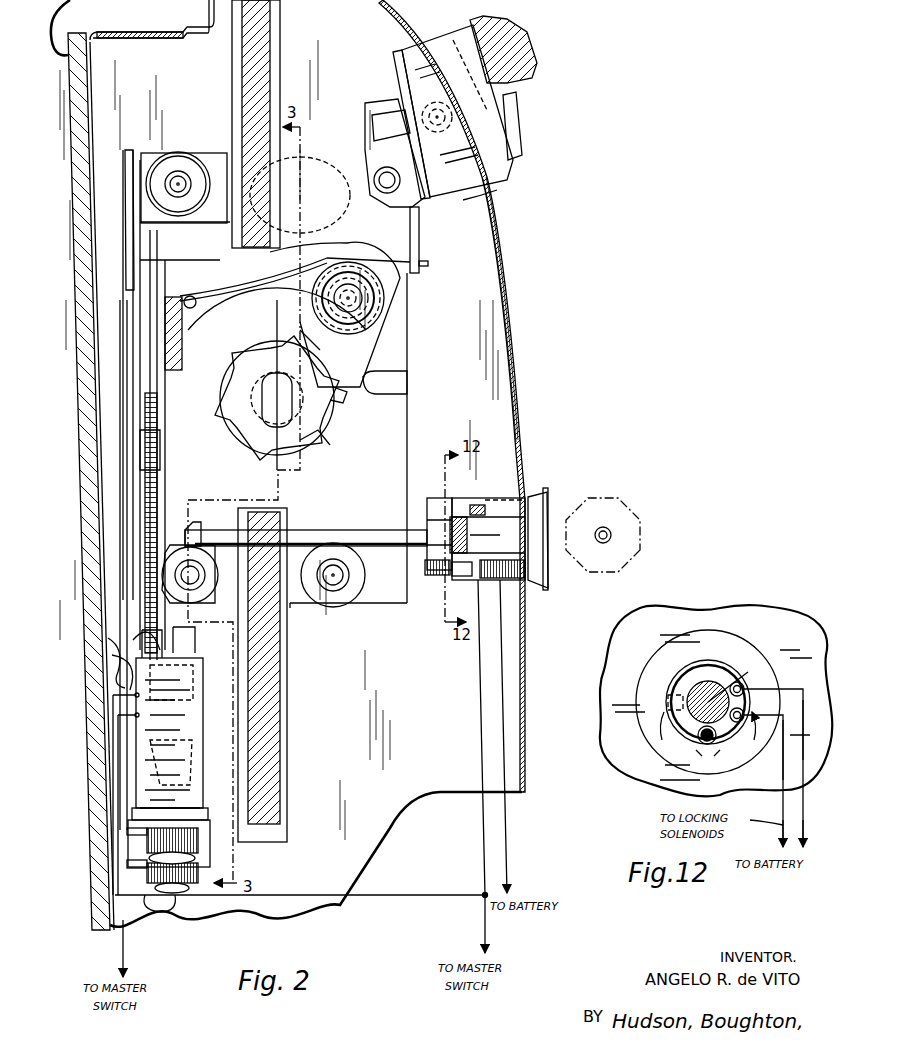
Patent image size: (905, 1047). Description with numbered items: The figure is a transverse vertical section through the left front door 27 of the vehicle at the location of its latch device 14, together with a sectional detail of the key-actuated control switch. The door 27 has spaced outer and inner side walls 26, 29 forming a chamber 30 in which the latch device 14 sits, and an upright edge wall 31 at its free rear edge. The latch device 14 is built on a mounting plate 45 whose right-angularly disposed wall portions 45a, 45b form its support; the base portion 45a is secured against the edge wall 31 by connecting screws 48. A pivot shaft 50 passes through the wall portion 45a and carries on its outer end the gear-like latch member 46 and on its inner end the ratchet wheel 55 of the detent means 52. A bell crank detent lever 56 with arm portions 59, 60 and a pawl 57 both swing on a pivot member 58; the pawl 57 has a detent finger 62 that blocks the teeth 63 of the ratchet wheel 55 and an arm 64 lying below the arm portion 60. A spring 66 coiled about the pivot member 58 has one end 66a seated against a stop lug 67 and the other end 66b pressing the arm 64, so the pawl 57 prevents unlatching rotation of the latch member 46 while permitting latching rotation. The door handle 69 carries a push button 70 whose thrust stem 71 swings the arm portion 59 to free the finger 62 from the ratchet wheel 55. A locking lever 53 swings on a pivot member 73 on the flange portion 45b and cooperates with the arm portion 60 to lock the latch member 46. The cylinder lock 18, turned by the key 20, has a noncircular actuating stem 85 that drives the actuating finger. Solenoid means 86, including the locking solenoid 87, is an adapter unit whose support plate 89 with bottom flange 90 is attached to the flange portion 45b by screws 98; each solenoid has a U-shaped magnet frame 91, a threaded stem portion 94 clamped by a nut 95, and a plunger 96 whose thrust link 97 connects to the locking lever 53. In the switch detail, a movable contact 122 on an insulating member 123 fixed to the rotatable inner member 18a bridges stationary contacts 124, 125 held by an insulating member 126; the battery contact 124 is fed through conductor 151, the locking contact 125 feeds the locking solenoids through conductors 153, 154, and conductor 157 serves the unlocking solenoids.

In FIG. 2, the latch device 14 is at (407, 432).
In FIG. 2, the cylinder lock 18 is at (478, 500).
In FIG. 12, the cylinder lock 18 is at (712, 664).
In FIG. 2, the rotatable inner member 18a is at (505, 490).
In FIG. 12, the rotatable inner member 18a is at (722, 690).
In FIG. 2, the key 20 is at (620, 514).
In FIG. 2, the outer side wall 26 is at (511, 298).
In FIG. 12, the outer side wall 26 is at (698, 612).
In FIG. 2, the front door 27 is at (505, 262).
In FIG. 2, the inner side wall 29 is at (85, 395).
In FIG. 2, the chamber 30 is at (500, 320).
In FIG. 2, the edge wall 31 is at (448, 795).
In FIG. 2, the mounting plate 45 is at (213, 158).
In FIG. 2, the wall portion 45a is at (404, 398).
In FIG. 2, the wall portion 45b is at (125, 165).
In FIG. 2, the latch member 46 is at (222, 442).
In FIG. 2, the connecting screws 48 is at (333, 590).
In FIG. 2, the pivot shaft 50 is at (262, 392).
In FIG. 2, the detent means 52 is at (385, 342).
In FIG. 2, the locking lever 53 is at (160, 450).
In FIG. 2, the ratchet wheel 55 is at (320, 432).
In FIG. 2, the detent lever 56 is at (250, 188).
In FIG. 2, the pawl 57 is at (335, 252).
In FIG. 2, the pivot member 58 is at (385, 300).
In FIG. 2, the arm portion 59 is at (345, 120).
In FIG. 2, the arm portion 60 is at (192, 235).
In FIG. 2, the detent finger 62 is at (390, 370).
In FIG. 2, the teeth 63 is at (340, 403).
In FIG. 2, the arm 64 is at (182, 330).
In FIG. 2, the spring 66 is at (398, 320).
In FIG. 2, the spring end 66a is at (423, 262).
In FIG. 2, the spring end 66b is at (205, 305).
In FIG. 2, the stop lug 67 is at (416, 234).
In FIG. 2, the handle 69 is at (520, 82).
In FIG. 2, the push button 70 is at (515, 135).
In FIG. 2, the thrust stem 71 is at (388, 115).
In FIG. 2, the pivot member 73 is at (150, 228).
In FIG. 2, the actuating stem 85 is at (300, 530).
In FIG. 2, the solenoid means 86 is at (210, 700).
In FIG. 2, the locking solenoid 87 is at (206, 718).
In FIG. 2, the support plate 89 is at (125, 753).
In FIG. 2, the bottom flange 90 is at (178, 812).
In FIG. 2, the magnet frame 91 is at (197, 782).
In FIG. 2, the threaded stem portion 94 is at (172, 895).
In FIG. 2, the clamping nut 95 is at (148, 896).
In FIG. 2, the plunger 96 is at (195, 735).
In FIG. 2, the thrust link 97 is at (168, 482).
In FIG. 2, the screws 98 is at (118, 670).
In FIG. 2, the movable switch contact 122 is at (447, 578).
In FIG. 12, the movable switch contact 122 is at (700, 735).
In FIG. 2, the insulating member 123 is at (428, 505).
In FIG. 2, the stationary contact 124 is at (430, 527).
In FIG. 12, the stationary contact 124 is at (745, 685).
In FIG. 2, the stationary contact 125 is at (415, 567).
In FIG. 12, the stationary contact 125 is at (712, 770).
In FIG. 2, the insulating member 126 is at (458, 502).
In FIG. 12, the insulating member 126 is at (680, 686).
In FIG. 2, the conductor 151 is at (508, 840).
In FIG. 12, the conductor 151 is at (804, 780).
In FIG. 2, the conductor 153 is at (485, 921).
In FIG. 2, the conductor 154 is at (485, 850).
In FIG. 12, the conductor 154 is at (783, 800).
In FIG. 2, the conductor 157 is at (123, 950).